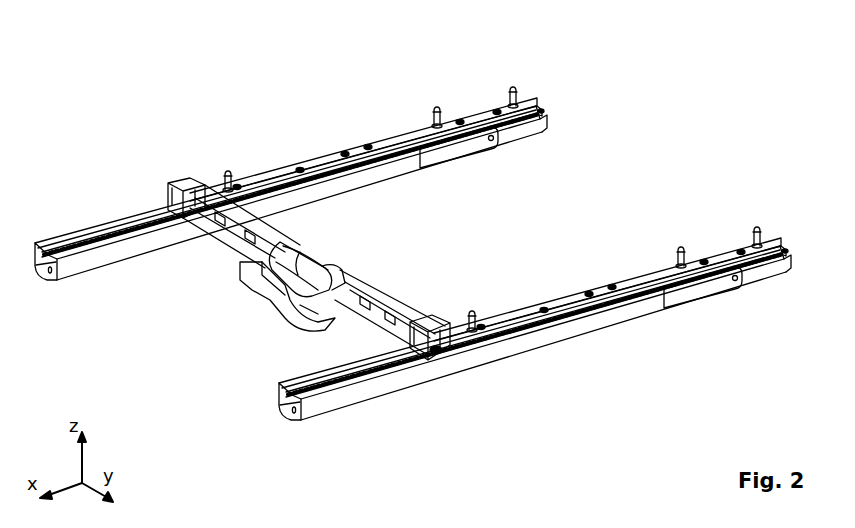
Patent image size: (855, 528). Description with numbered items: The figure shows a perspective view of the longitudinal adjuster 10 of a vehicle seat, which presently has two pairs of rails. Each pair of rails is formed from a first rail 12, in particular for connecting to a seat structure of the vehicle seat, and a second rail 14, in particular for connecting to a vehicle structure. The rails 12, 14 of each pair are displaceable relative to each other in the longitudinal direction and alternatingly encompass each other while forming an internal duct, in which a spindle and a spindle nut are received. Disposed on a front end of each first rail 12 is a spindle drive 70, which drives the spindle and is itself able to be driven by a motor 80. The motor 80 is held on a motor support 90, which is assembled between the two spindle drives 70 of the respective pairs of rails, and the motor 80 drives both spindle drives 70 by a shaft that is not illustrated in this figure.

The longitudinal adjuster 10 is at (223, 112).
The first rail 12 is at (400, 136).
The second rail 14 is at (417, 161).
The spindle drive 70 is at (432, 352).
The motor 80 is at (302, 258).
The motor support 90 is at (310, 323).